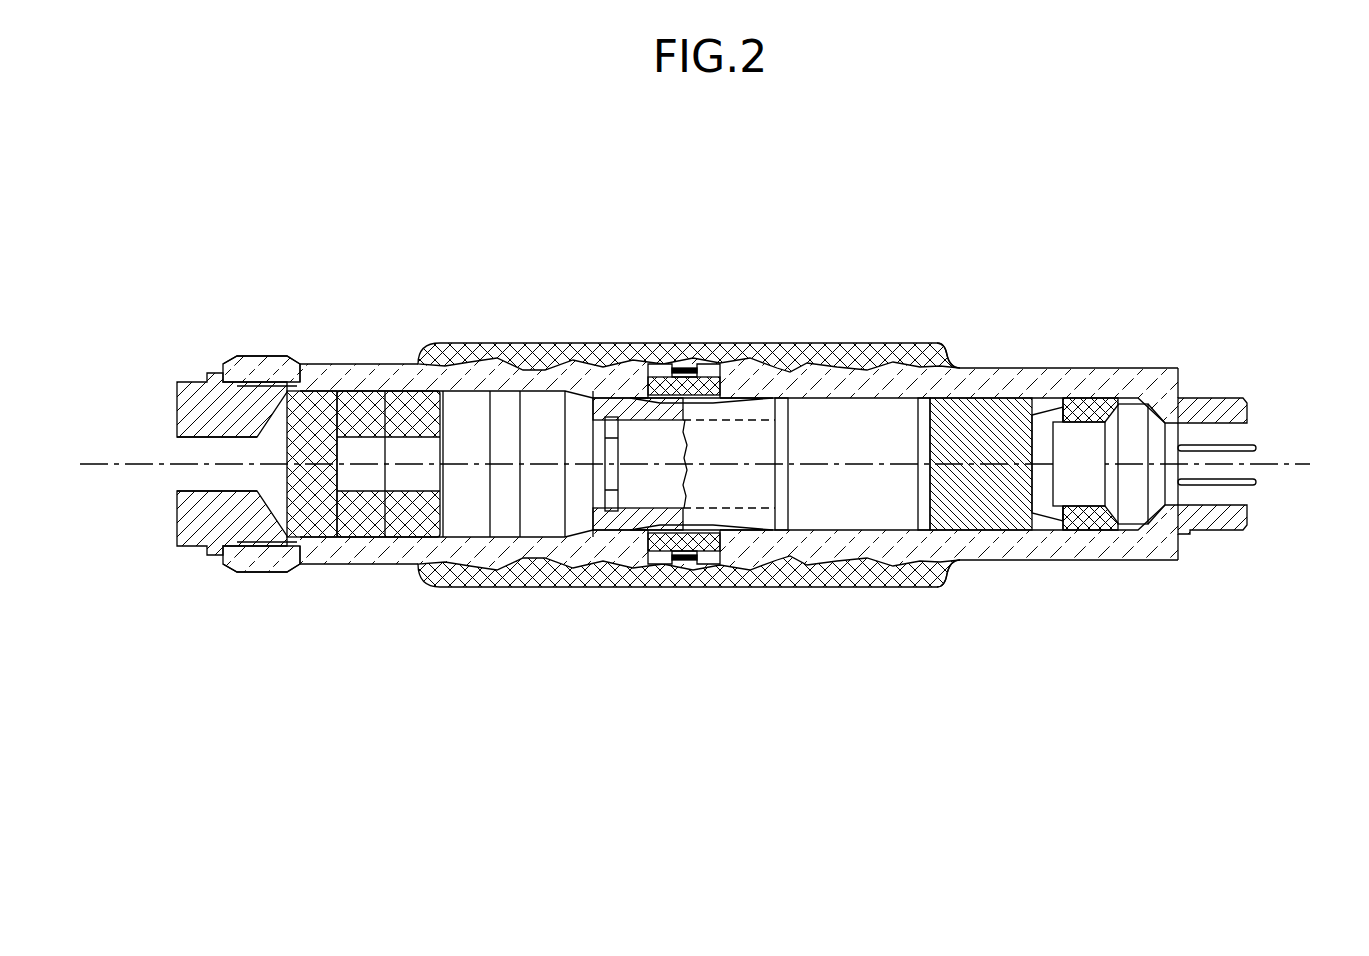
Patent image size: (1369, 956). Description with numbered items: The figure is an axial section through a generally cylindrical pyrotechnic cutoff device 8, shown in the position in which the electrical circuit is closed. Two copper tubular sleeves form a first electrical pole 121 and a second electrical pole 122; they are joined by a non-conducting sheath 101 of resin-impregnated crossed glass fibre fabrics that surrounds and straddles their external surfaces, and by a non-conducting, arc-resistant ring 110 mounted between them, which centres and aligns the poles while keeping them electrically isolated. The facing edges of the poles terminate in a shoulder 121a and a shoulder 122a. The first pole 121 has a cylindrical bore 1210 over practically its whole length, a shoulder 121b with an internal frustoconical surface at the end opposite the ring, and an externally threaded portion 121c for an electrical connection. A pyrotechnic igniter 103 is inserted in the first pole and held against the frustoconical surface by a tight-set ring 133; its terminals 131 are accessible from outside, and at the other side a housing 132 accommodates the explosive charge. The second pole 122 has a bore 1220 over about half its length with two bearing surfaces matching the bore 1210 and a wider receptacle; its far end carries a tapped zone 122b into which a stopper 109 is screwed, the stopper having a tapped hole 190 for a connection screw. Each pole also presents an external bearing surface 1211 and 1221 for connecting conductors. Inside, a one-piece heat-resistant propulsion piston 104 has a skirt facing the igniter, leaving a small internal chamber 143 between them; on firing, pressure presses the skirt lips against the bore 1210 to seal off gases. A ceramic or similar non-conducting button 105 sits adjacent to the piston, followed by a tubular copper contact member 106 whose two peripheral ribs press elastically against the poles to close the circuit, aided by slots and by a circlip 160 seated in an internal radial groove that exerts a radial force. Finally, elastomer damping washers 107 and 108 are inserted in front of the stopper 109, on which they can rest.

The cutoff device 8 is at (1088, 241).
The sheath 101 is at (657, 350).
The pyrotechnic igniter 103 is at (1133, 510).
The propulsion piston 104 is at (942, 510).
The button 105 is at (845, 510).
The contact member 106 is at (746, 520).
The damping washer 107 is at (403, 523).
The damping washer 108 is at (303, 507).
The stopper 109 is at (204, 520).
The ring 110 is at (724, 368).
The first electrical pole 121 is at (967, 380).
The shoulder 121a is at (683, 366).
The shoulder 121b is at (1163, 380).
The externally threaded portion 121c is at (1178, 410).
The second electrical pole 122 is at (372, 373).
The shoulder 122a is at (632, 390).
The tapped zone 122b is at (256, 358).
The terminals 131 is at (1241, 482).
The housing 132 is at (1070, 483).
The ring 133 is at (1085, 410).
The internal chamber 143 is at (1013, 473).
The circlip 160 is at (610, 500).
The tapped hole 190 is at (193, 457).
The cylindrical bore 1210 is at (864, 401).
The external bearing surface 1211 is at (1128, 362).
The bore 1220 is at (469, 400).
The external bearing surface 1221 is at (311, 356).